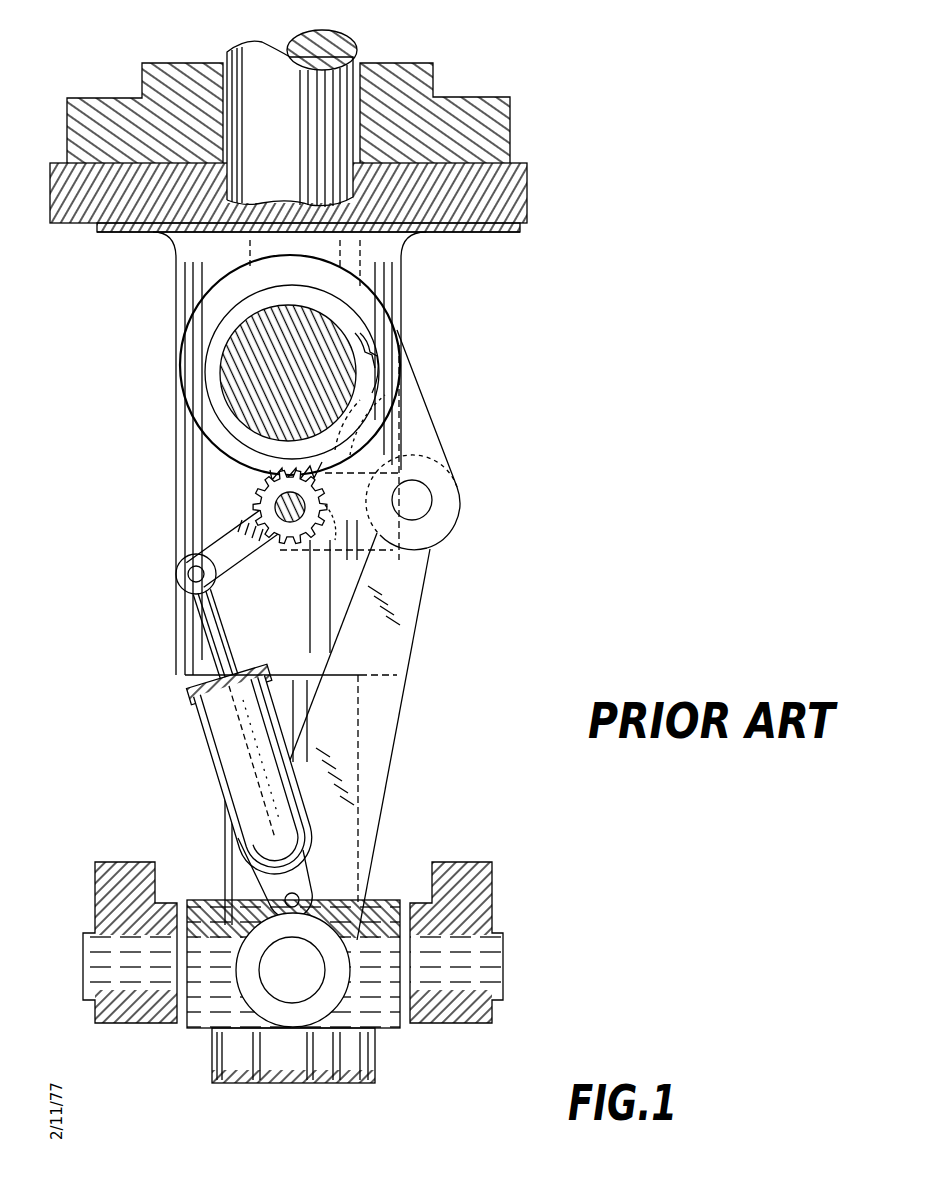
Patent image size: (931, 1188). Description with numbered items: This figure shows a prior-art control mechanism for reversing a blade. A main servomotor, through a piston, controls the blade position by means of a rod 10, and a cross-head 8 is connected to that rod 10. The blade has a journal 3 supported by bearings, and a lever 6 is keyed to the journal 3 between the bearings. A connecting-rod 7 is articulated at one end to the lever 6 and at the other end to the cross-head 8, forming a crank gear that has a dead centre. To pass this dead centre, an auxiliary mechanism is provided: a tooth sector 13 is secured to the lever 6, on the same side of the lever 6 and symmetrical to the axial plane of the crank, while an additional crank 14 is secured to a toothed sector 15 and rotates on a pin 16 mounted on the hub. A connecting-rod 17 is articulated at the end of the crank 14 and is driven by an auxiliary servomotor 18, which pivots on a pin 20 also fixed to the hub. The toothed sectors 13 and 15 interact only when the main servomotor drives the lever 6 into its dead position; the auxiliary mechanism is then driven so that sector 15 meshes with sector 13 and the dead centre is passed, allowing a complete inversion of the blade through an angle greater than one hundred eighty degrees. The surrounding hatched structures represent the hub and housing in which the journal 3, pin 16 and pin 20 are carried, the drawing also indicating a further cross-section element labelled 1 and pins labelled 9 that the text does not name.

The plate / housing wall 1 is at (483, 200).
The journal 3 is at (233, 330).
The lever 6 is at (413, 418).
The connecting-rod 7 is at (377, 731).
The cross-head 8 is at (373, 1010).
The shaft 9 is at (117, 960).
The rod 10 is at (253, 72).
The tooth sector 13 is at (377, 387).
The additional crank 14 is at (228, 537).
The toothed sector 15 is at (333, 517).
The pin 16 is at (288, 524).
The connecting-rod 17 is at (210, 633).
The auxiliary servomotor 18 is at (208, 743).
The pin 20 is at (298, 893).